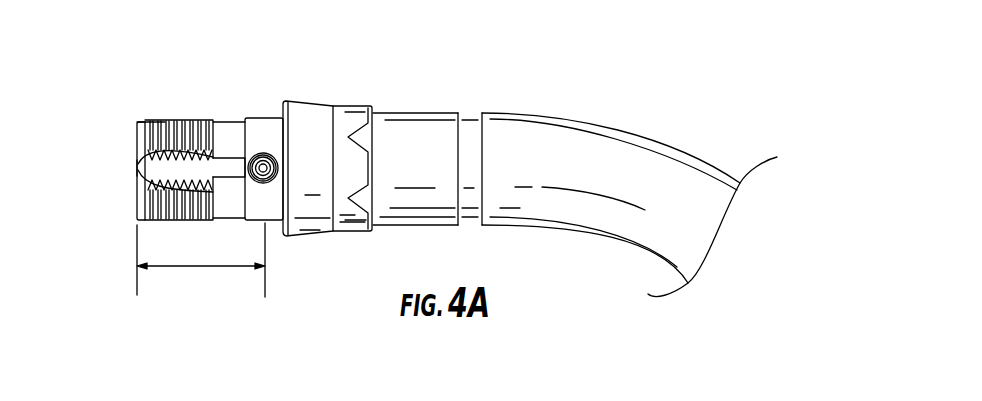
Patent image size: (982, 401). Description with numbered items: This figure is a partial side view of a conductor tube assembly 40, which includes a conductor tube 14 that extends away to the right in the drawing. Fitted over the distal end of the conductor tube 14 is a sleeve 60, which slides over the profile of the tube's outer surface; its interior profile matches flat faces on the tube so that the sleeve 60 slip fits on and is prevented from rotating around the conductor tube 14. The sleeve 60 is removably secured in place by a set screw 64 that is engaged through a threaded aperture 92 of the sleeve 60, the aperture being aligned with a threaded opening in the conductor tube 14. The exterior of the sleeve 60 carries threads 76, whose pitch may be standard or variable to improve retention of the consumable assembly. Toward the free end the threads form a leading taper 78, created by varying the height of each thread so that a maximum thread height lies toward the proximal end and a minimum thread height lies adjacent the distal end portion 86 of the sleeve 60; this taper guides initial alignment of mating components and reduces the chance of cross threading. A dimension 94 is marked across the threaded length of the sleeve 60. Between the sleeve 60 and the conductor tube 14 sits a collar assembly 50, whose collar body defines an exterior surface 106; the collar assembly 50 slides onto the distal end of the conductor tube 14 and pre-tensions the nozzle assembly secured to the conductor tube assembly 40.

The conductor tube assembly 40 is at (527, 72).
The conductor tube 14 is at (633, 162).
The collar assembly 50 is at (356, 94).
The exterior surface 106 is at (312, 237).
The sleeve 60 is at (226, 134).
The threads 76 is at (200, 118).
The leading taper of threads 78 is at (165, 113).
The set screw 64 is at (259, 154).
The threaded aperture 92 is at (271, 154).
The distal end portion 86 is at (128, 193).
The thread length 94 is at (172, 268).